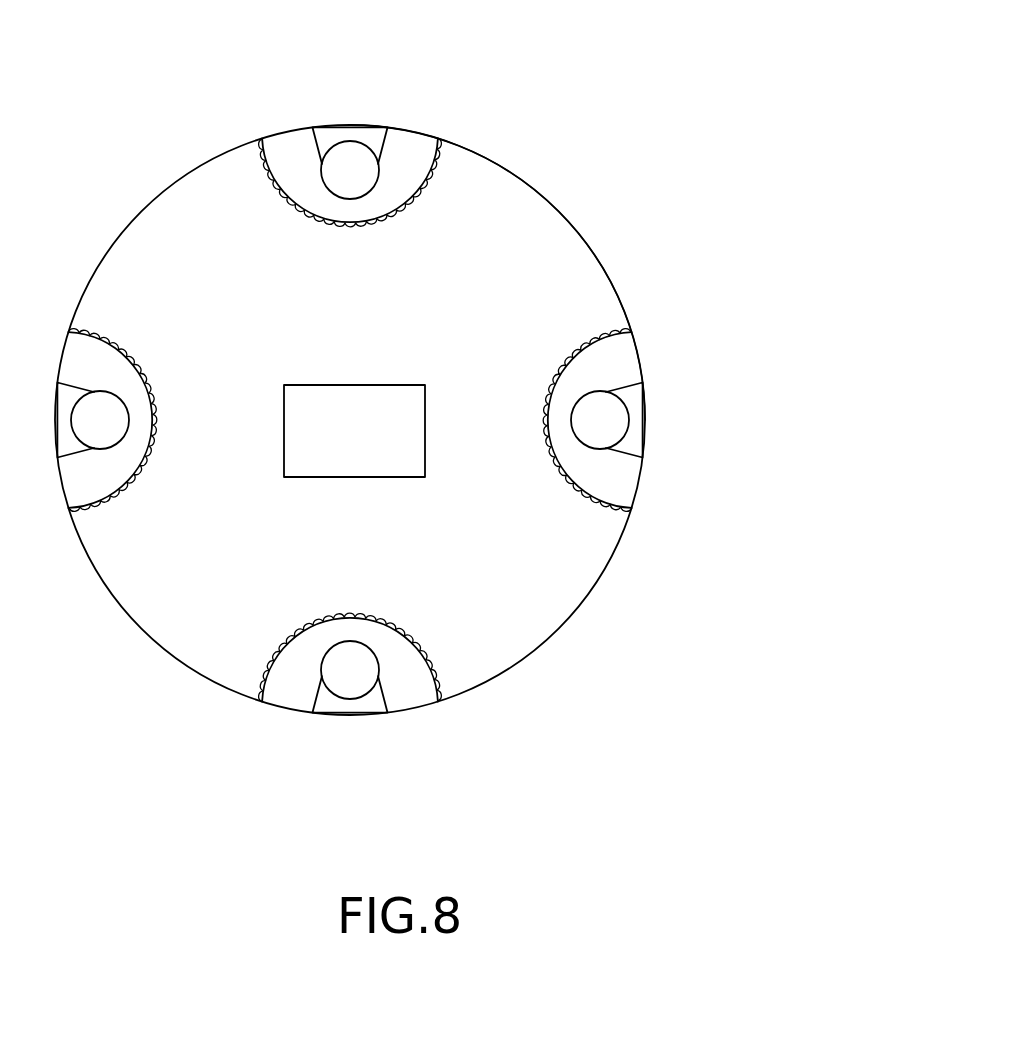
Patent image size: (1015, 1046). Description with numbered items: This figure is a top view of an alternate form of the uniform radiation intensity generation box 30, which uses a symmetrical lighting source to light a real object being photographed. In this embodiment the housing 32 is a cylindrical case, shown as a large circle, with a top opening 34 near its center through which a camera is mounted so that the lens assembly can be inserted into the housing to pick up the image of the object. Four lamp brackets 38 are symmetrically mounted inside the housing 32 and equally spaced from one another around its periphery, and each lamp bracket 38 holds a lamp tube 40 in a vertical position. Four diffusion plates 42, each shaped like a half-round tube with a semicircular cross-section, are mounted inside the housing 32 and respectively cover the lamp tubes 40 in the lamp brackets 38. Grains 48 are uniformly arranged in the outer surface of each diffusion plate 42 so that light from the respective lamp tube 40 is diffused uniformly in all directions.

The uniform radiation intensity generation box 30 is at (907, 143).
The housing 32 is at (605, 280).
The top opening 34 is at (380, 423).
The lamp bracket 38 is at (636, 406).
The lamp tube 40 is at (608, 438).
The diffusion plate 42 is at (610, 445).
The grains 48 is at (580, 492).